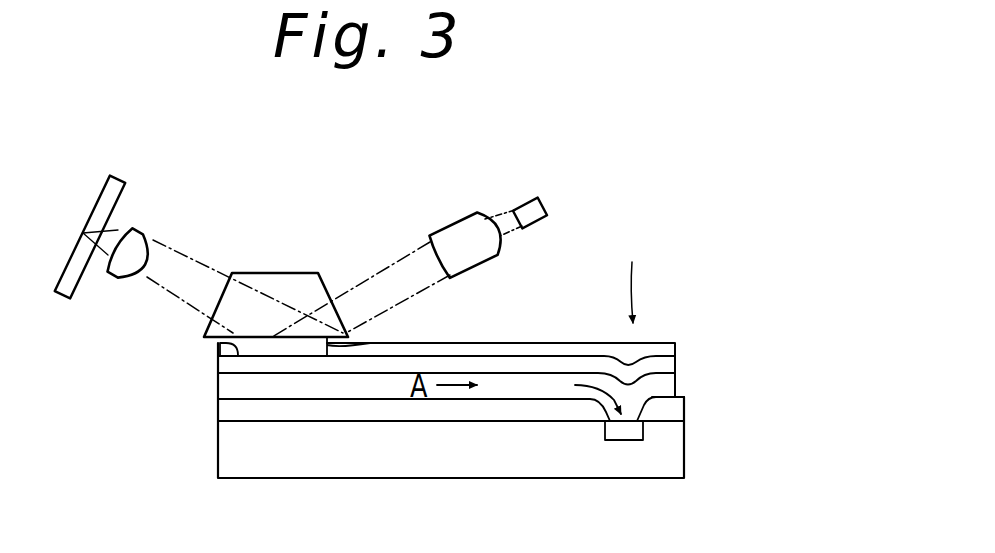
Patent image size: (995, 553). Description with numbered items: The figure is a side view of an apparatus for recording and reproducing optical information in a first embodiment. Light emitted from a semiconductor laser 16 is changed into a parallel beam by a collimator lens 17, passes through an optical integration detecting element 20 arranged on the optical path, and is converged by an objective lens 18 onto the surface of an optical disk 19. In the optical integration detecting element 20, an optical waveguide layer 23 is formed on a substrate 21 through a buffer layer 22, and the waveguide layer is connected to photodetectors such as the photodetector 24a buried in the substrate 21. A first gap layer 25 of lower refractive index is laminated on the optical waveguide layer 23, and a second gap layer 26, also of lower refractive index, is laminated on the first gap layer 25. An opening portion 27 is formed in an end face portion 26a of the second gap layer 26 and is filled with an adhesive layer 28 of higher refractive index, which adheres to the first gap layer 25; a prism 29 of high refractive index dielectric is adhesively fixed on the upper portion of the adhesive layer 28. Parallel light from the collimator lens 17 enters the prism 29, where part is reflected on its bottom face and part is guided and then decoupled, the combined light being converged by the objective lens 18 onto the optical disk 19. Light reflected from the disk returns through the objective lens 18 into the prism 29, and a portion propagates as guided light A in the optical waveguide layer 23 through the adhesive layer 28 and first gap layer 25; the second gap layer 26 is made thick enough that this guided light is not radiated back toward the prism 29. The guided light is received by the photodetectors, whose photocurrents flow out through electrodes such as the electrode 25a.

The semiconductor laser 16 is at (532, 208).
The collimator lens 17 is at (452, 232).
The objective lens 18 is at (137, 243).
The optical disk 19 is at (113, 203).
The optical integration detecting element 20 is at (615, 320).
The substrate 21 is at (382, 463).
The buffer layer 22 is at (225, 410).
The optical waveguide layer 23 is at (665, 387).
The photodetector 24a is at (630, 437).
The first gap layer 25 is at (665, 367).
The electrode 25a is at (683, 391).
The second gap layer 26 is at (527, 343).
The end face portion 26a is at (380, 342).
The opening portion 27 is at (218, 350).
The adhesive layer 28 is at (290, 345).
The prism 29 is at (260, 273).